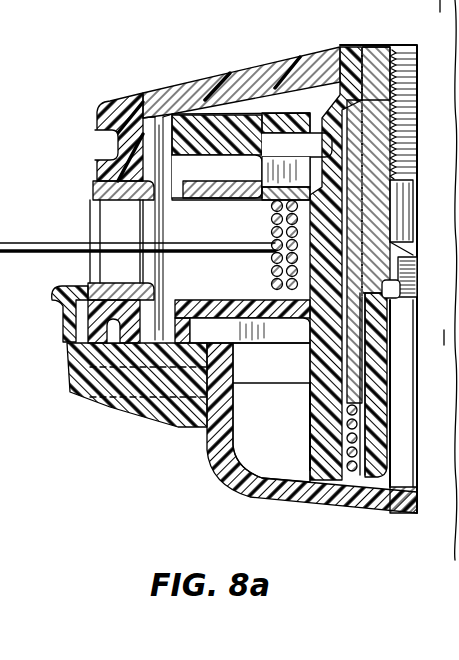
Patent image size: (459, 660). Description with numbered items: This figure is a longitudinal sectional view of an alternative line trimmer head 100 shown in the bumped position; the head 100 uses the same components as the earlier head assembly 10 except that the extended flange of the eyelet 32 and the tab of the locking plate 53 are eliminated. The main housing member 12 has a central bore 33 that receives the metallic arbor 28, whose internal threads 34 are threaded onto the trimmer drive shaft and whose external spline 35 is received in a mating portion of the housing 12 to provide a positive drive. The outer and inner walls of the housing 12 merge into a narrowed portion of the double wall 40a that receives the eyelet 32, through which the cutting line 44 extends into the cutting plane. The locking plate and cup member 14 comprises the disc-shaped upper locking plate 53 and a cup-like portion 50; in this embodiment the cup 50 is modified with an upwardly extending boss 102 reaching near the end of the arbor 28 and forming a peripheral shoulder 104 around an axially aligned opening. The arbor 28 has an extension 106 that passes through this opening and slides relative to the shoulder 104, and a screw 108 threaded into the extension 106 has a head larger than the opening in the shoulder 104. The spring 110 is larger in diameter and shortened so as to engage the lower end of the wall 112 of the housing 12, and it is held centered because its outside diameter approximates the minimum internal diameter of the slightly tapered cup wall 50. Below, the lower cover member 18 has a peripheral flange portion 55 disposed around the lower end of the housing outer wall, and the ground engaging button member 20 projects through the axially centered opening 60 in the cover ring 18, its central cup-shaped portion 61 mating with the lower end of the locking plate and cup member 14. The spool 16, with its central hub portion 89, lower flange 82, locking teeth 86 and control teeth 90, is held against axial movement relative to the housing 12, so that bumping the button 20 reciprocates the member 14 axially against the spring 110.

The head 100 is at (168, 68).
The head assembly 10 is at (207, 70).
The main housing member 12 is at (241, 61).
The upper locking plate 53 is at (232, 108).
The locking plate and cup member 14 is at (313, 112).
The external spline 35 is at (352, 55).
The central bore 33 is at (368, 45).
The arbor 28 is at (395, 46).
The internal threads 34 is at (405, 158).
The extension 106 is at (410, 228).
The screw 108 is at (412, 275).
The peripheral shoulder 104 is at (400, 328).
The boss 102 is at (394, 513).
The wall 112 is at (360, 372).
The spring 110 is at (348, 490).
The ground engaging button member 20 is at (290, 432).
The cup-like portion 50 is at (322, 432).
The central cup-shaped portion 61 is at (312, 465).
The opening 60 is at (217, 440).
The lower cover member 18 is at (97, 410).
The peripheral flange portion 55 is at (67, 345).
The cutting line 44 is at (48, 256).
The eyelet 32 is at (100, 200).
The narrowed portion of the double wall 40a is at (130, 138).
The spool 16 is at (252, 136).
The locking teeth 86 is at (266, 140).
The lower flange 82 is at (225, 292).
The central hub portion 89 is at (305, 277).
The control teeth 90 is at (243, 345).